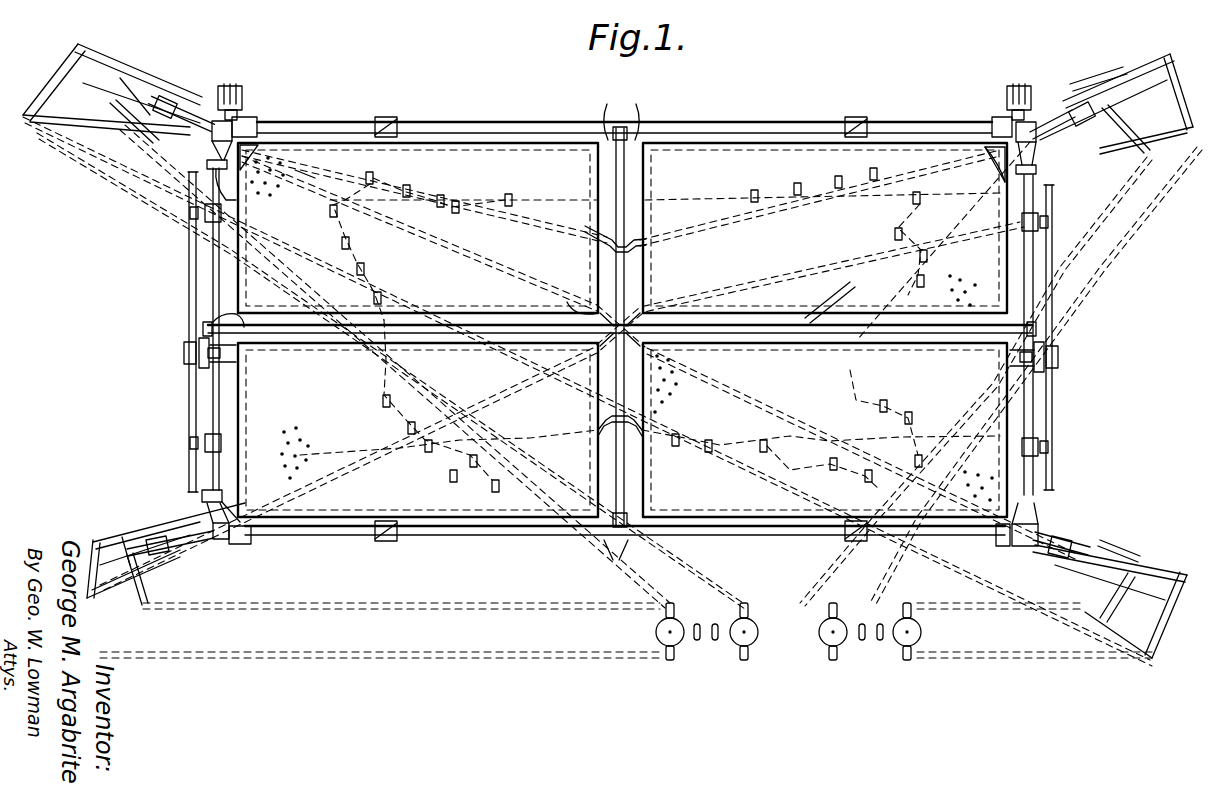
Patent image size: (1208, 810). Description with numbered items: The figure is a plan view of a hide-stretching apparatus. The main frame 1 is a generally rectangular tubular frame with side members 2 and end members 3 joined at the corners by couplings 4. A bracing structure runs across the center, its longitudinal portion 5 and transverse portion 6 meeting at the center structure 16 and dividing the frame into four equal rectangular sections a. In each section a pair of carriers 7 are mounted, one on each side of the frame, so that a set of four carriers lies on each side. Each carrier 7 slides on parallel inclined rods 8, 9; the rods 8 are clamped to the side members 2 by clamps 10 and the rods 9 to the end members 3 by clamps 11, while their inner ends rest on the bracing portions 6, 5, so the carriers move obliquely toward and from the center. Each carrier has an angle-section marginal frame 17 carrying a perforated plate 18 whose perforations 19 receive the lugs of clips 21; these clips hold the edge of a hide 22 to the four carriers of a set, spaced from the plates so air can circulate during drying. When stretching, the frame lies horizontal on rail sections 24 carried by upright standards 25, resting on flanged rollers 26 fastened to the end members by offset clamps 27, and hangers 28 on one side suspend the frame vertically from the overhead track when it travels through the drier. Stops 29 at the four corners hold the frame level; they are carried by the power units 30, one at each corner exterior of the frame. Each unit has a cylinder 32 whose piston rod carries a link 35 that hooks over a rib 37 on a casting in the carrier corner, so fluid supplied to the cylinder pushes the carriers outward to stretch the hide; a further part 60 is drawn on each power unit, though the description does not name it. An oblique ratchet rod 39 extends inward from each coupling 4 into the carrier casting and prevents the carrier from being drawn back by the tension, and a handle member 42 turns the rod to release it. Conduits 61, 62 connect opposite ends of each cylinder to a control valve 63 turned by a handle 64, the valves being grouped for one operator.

The main frame 1 is at (477, 122).
The side members 2 is at (572, 126).
The end members 3 is at (212, 283).
The couplings 4 is at (208, 155).
The longitudinal portion of bracing structure 5 is at (672, 318).
The transverse portion of bracing structure 6 is at (612, 269).
The carriers 7 is at (523, 143).
The inclined rods 8 is at (640, 242).
The inclined rods 9 is at (473, 175).
The clamps 10 is at (386, 120).
The clamps 11 is at (204, 212).
The central spacer structure 16 is at (592, 304).
The marginal frame 17 is at (212, 176).
The perforated plate 18 is at (252, 150).
The perforations 19 is at (278, 188).
The clips or toggles 21 is at (508, 203).
The hide 22 is at (672, 200).
The rail sections 24 is at (198, 253).
The upright standards 25 is at (1040, 262).
The flanged rollers 26 is at (184, 352).
The clamps 27 is at (220, 365).
The hangers 28 is at (242, 94).
The stops 29 is at (215, 118).
The power units 30 is at (148, 55).
The cylinder 32 is at (98, 88).
The link 35 is at (160, 118).
The rib 37 is at (316, 163).
The ratchet rod 39 is at (1000, 170).
The handle member 42 is at (202, 497).
The cross bar 60 is at (135, 130).
The conduit 61 is at (300, 272).
The conduit 62 is at (277, 277).
The control valve 63 is at (655, 632).
The handle 64 is at (714, 641).
The rectangular sections a is at (622, 332).